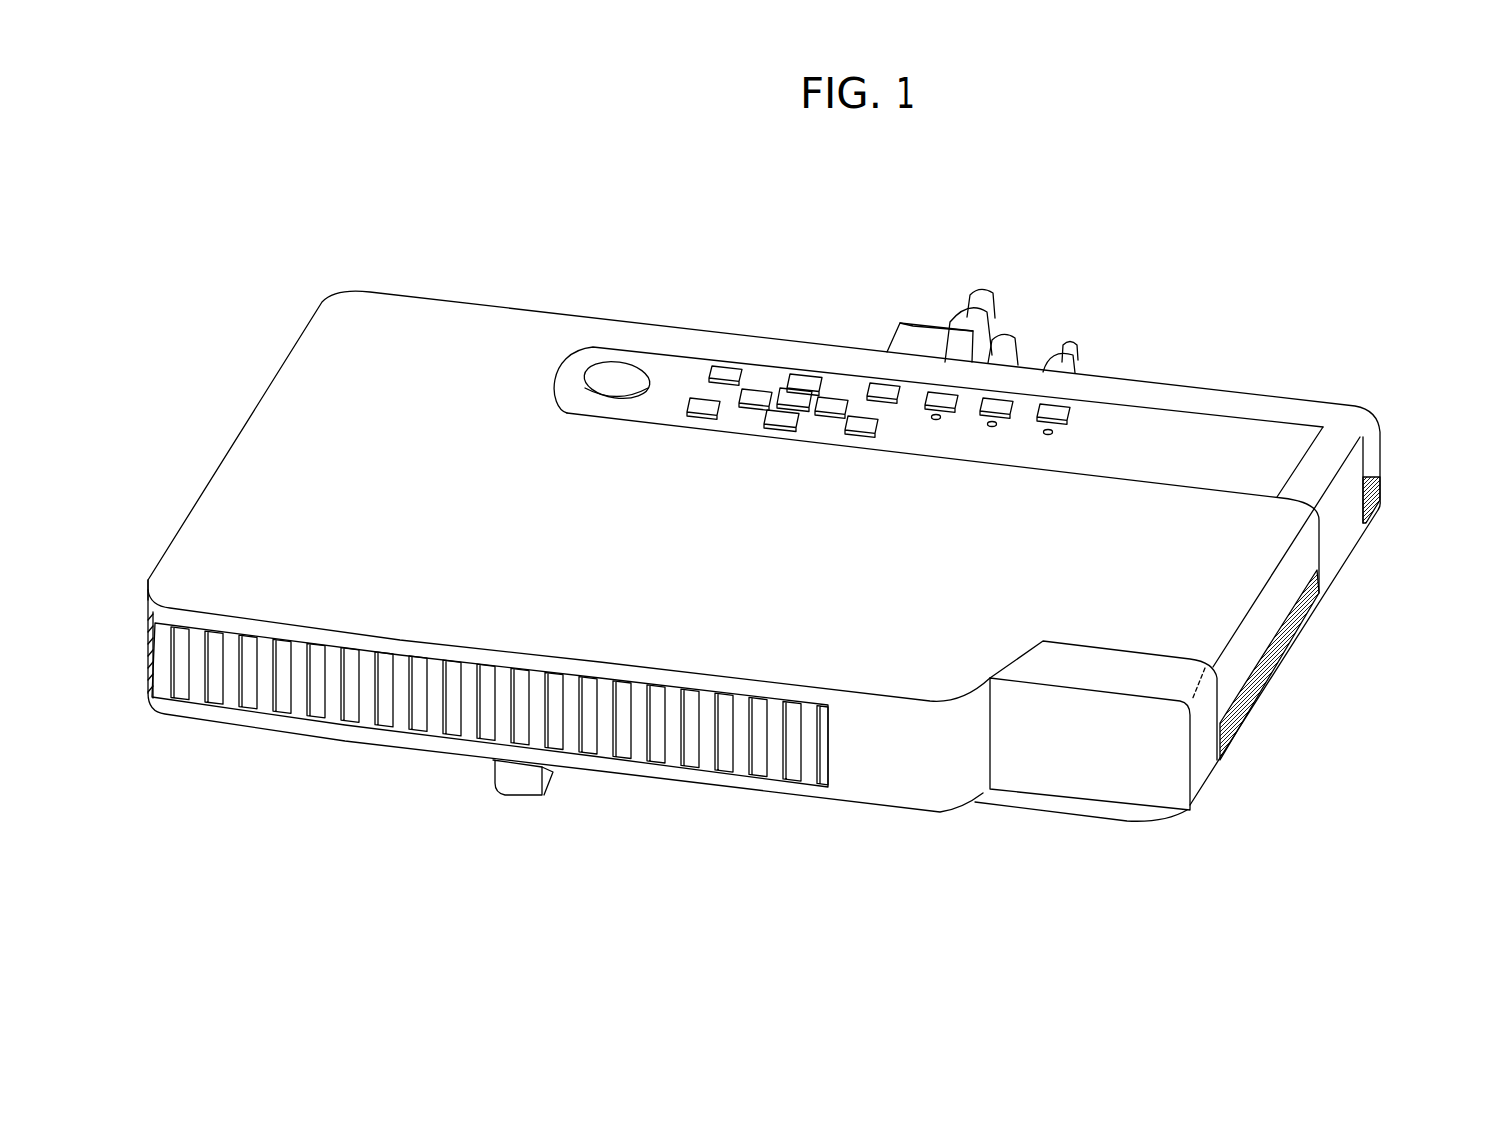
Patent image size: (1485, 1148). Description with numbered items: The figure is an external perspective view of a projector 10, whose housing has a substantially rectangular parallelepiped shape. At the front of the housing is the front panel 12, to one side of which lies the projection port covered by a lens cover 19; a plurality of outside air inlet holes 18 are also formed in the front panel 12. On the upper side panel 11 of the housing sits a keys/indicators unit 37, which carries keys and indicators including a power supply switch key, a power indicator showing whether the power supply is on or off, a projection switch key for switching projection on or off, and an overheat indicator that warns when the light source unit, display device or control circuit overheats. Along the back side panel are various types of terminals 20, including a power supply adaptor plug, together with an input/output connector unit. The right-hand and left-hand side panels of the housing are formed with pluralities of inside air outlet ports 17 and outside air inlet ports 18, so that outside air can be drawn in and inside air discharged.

The projector 10 is at (717, 245).
The upper side panel 11 is at (518, 318).
The front panel 12 is at (878, 778).
The inside air outlet ports 17 is at (1258, 693).
The outside air inlet holes 18 is at (754, 780).
The lens cover 19 is at (1103, 773).
The terminals 20 is at (1025, 296).
The keys/indicators unit 37 is at (810, 327).